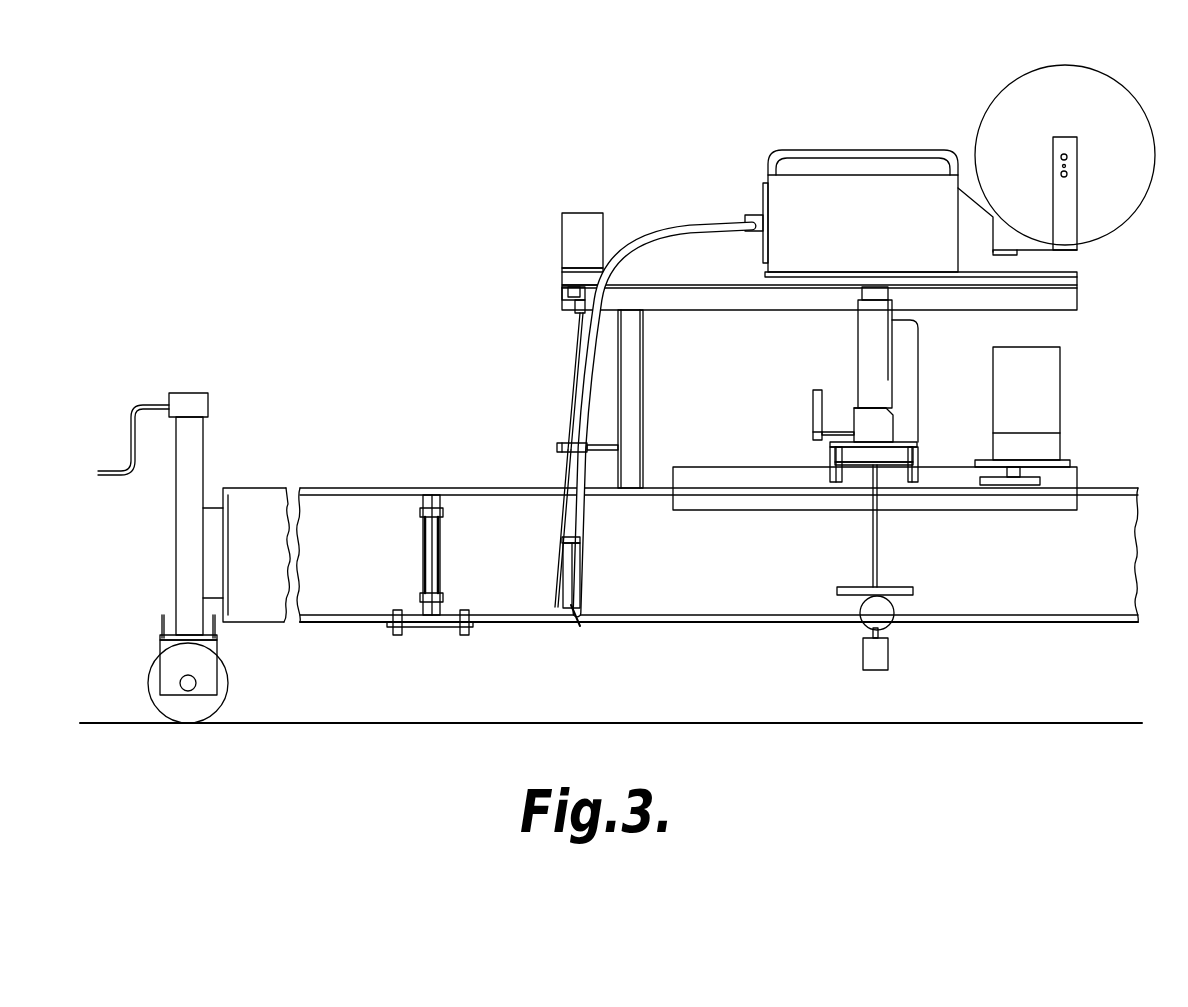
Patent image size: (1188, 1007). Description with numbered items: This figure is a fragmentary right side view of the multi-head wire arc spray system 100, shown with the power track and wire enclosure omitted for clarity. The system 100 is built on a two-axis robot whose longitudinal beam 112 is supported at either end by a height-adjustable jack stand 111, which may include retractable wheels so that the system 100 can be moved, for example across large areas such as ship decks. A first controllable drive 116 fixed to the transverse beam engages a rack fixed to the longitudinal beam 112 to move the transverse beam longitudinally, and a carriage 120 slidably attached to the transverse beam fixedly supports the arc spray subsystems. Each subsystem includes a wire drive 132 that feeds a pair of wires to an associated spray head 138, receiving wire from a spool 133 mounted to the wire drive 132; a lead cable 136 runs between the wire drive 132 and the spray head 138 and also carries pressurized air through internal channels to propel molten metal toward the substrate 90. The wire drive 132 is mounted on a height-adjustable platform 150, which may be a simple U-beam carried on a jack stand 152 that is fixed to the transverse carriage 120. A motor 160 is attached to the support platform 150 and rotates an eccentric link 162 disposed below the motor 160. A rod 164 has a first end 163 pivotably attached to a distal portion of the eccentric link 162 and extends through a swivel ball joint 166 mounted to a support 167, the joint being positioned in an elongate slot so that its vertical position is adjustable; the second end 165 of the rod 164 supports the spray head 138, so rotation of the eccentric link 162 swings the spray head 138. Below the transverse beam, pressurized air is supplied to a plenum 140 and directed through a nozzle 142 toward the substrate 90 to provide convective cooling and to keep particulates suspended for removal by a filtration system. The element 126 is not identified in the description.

The substrate 90 is at (1112, 716).
The multi-head wire arc spray system 100 is at (326, 268).
The jack stand 111 is at (190, 398).
The longitudinal beam 112 is at (656, 565).
The first controllable drive 116 is at (1061, 378).
The carriage 120 is at (924, 453).
The fluid line 126 is at (915, 358).
The wire drive 132 is at (839, 185).
The spool 133 is at (1133, 110).
The lead cable 136 is at (662, 226).
The spray head 138 is at (575, 612).
The plenum 140 is at (860, 607).
The nozzle 142 is at (890, 655).
The height-adjustable platform 150 is at (1084, 286).
The jack stand 152 is at (866, 347).
The motor 160 is at (573, 213).
The eccentric link 162 is at (575, 303).
The first end 163 is at (575, 336).
The rod 164 is at (571, 428).
The second end 165 is at (555, 537).
The swivel ball joint 166 is at (560, 452).
The support 167 is at (643, 370).